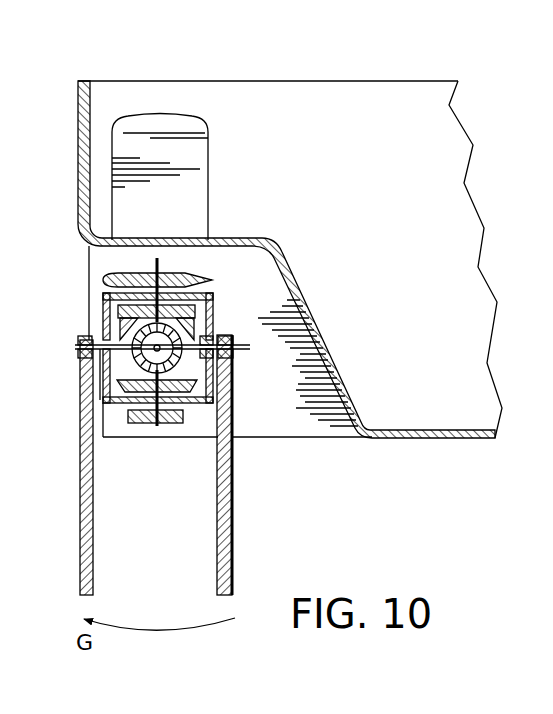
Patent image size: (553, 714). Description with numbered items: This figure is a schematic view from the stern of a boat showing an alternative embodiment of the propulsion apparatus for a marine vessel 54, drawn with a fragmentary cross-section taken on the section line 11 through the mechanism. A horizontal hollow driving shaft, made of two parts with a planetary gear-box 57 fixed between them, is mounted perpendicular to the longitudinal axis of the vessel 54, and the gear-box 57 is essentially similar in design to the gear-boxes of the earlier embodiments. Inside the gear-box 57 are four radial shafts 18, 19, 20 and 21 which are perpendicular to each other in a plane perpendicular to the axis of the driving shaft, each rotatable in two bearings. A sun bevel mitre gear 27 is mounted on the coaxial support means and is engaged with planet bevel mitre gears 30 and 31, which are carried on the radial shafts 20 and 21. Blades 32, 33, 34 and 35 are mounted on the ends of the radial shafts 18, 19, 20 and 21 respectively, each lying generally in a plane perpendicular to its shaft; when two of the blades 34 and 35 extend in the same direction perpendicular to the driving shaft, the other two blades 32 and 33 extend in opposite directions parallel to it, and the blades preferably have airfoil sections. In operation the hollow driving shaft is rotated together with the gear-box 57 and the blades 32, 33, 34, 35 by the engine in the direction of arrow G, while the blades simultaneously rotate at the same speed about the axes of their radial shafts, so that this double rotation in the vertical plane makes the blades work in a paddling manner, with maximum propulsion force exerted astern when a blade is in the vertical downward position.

The hollow driving shaft 11 is at (162, 13).
The radial shaft 18 is at (158, 268).
The radial shaft 19 is at (157, 426).
The radial shaft 20 is at (80, 347).
The radial shaft 21 is at (235, 347).
The sun bevel mitre gear 27 is at (195, 330).
The planet bevel mitre gear 30 is at (132, 334).
The planet bevel mitre gear 31 is at (230, 350).
The blade 32 is at (112, 276).
The blade 33 is at (177, 424).
The blade 34 is at (80, 470).
The blade 35 is at (233, 490).
The marine vessel 54 is at (401, 93).
The gear-box 57 is at (100, 385).